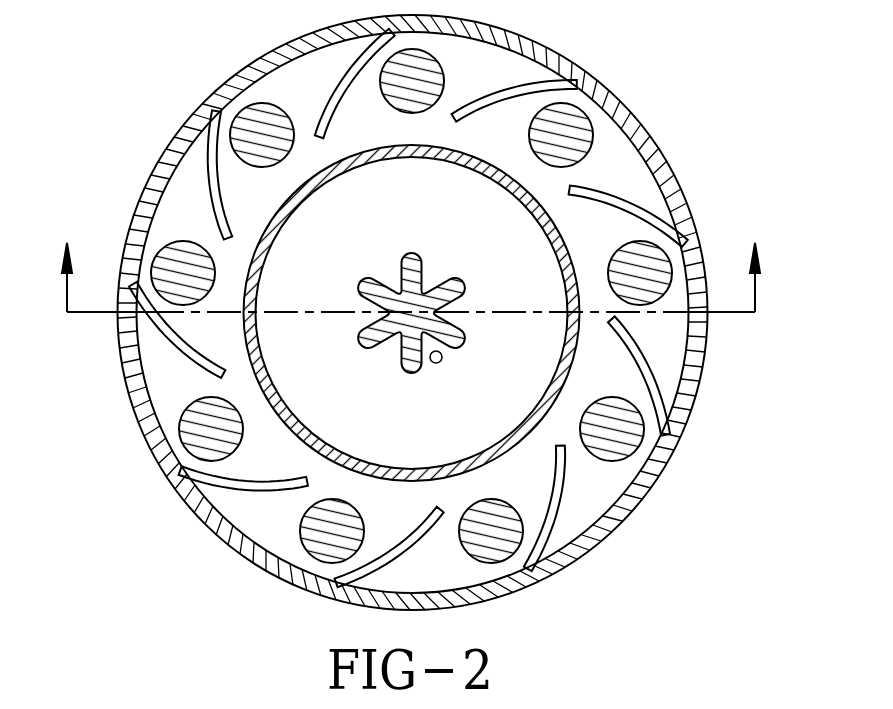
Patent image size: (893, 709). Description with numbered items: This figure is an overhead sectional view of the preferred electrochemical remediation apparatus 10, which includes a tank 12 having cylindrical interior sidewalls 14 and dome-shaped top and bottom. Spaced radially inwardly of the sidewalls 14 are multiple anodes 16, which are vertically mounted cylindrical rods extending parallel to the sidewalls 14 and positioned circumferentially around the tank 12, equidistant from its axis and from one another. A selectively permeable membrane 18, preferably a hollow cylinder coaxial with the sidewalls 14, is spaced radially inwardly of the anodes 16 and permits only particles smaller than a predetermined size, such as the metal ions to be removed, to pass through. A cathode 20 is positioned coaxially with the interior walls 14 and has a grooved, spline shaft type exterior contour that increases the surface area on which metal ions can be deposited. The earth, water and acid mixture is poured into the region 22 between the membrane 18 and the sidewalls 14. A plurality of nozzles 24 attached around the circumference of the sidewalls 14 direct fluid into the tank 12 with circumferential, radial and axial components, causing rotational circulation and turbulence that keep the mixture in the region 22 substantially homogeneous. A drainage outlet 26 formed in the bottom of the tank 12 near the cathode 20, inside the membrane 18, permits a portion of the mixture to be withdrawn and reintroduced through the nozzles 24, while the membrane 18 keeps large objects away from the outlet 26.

The electrochemical remediation apparatus 10 is at (165, 80).
The tank 12 is at (640, 501).
The cylindrical interior sidewalls 14 is at (590, 530).
The anodes 16 is at (400, 68).
The selectively permeable membrane 18 is at (268, 237).
The cathode 20 is at (418, 266).
The region 22 is at (187, 200).
The nozzles 24 is at (507, 83).
The drainage outlet 26 is at (436, 364).